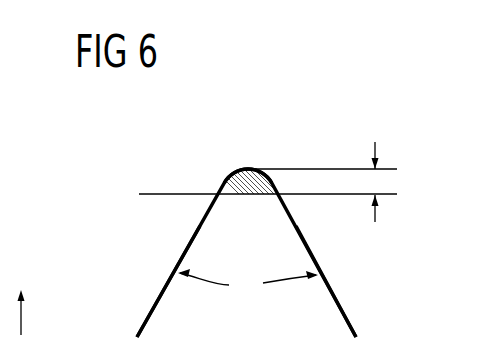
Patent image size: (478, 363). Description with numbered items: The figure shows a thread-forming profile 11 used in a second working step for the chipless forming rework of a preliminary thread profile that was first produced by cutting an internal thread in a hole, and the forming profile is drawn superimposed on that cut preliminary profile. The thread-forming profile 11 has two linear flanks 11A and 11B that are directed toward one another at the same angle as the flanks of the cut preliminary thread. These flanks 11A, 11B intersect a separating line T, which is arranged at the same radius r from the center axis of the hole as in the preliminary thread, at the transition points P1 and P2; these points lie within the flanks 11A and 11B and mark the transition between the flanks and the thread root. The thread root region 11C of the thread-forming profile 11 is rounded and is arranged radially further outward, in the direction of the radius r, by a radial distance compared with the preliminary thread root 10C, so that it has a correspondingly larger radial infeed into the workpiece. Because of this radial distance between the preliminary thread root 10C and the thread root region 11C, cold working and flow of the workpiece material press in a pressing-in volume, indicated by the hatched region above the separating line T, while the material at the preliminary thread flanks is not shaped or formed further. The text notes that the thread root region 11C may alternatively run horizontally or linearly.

The preliminary thread root 10C is at (241, 195).
The thread-forming profile 11 is at (183, 252).
The flank 11A is at (162, 293).
The flank 11B is at (340, 302).
The thread root region 11C is at (248, 168).
The separating line T is at (160, 193).
The transition point P1 is at (217, 197).
The transition point P2 is at (278, 198).
The radius r is at (21, 322).